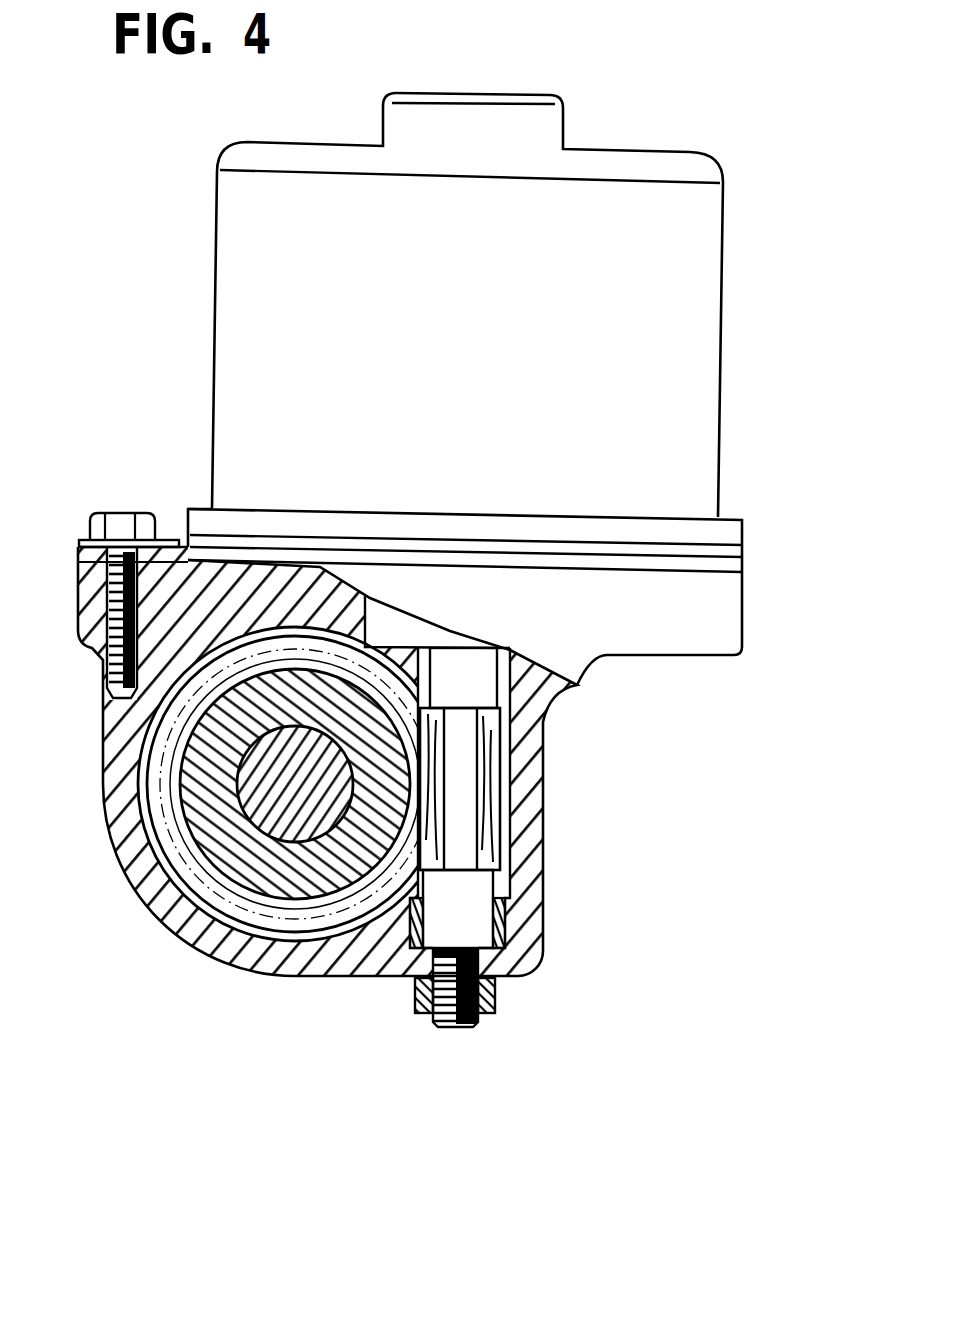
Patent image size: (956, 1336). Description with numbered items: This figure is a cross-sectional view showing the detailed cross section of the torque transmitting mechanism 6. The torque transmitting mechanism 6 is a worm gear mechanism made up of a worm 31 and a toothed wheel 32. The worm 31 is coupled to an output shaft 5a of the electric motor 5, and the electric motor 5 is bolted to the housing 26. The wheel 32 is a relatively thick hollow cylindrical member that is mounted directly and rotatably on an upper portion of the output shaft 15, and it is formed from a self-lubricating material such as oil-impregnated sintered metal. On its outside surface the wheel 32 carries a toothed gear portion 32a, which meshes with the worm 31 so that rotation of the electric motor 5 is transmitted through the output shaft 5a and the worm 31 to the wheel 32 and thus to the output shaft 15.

The electric motor 5 is at (690, 337).
The output shaft of the electric motor 5a is at (472, 687).
The torque transmitting mechanism 6 is at (445, 1087).
The output shaft 15 is at (255, 794).
The housing 26 is at (112, 834).
The worm 31 is at (497, 826).
The toothed wheel 32 is at (260, 926).
The toothed gear portion 32a is at (339, 917).